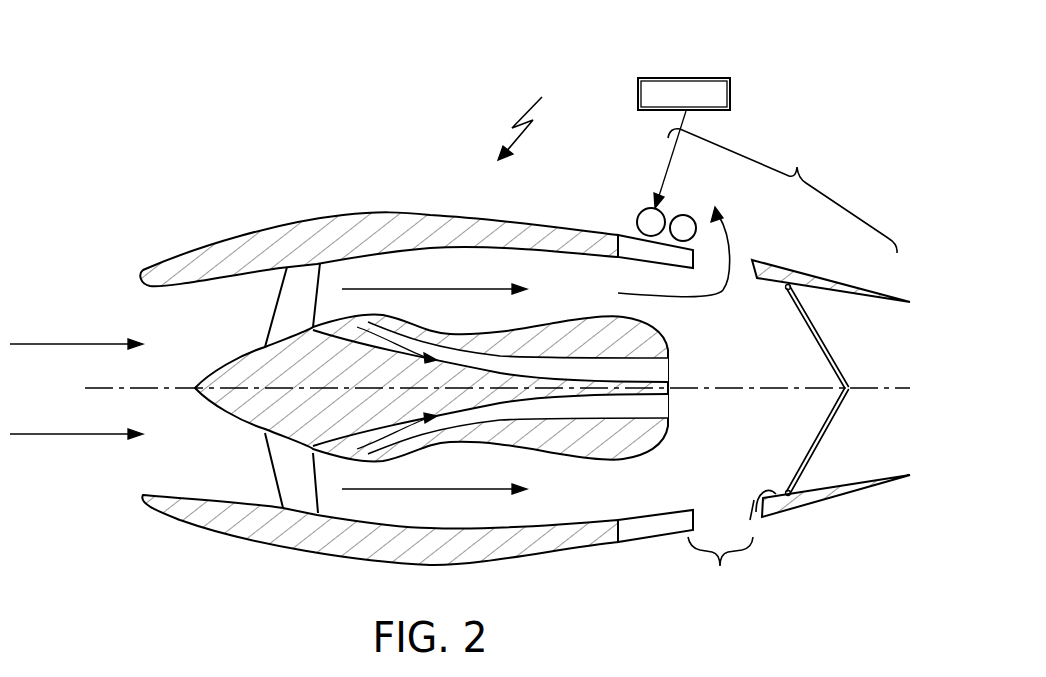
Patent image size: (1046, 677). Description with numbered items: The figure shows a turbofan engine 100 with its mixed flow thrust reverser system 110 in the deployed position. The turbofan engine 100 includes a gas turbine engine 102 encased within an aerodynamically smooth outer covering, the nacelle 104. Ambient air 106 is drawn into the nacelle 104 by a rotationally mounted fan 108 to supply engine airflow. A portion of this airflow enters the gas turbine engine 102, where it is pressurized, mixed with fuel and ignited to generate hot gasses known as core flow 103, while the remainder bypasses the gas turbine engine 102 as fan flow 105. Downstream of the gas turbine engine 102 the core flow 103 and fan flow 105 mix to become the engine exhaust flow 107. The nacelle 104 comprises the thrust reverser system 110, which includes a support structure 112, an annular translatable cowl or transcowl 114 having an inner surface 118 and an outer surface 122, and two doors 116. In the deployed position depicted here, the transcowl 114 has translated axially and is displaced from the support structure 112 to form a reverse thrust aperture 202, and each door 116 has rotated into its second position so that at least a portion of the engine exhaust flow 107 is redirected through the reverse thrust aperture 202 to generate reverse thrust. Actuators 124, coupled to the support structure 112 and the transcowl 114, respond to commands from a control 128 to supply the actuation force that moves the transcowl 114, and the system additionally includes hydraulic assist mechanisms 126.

The turbofan engine 100 is at (536, 114).
The gas turbine engine 102 is at (530, 320).
The core flow 103 is at (407, 345).
The nacelle 104 is at (335, 213).
The fan flow 105 is at (450, 278).
The ambient air 106 is at (88, 344).
The engine exhaust flow 107 is at (717, 302).
The fan 108 is at (302, 272).
The mixed flow thrust reverser system 110 is at (782, 189).
The support structure 112 is at (618, 235).
The transcowl 114 is at (840, 280).
The door 116 is at (822, 338).
The inner surface 118 is at (770, 508).
The outer surface 122 is at (848, 492).
The actuator 124 is at (646, 208).
The hydraulic assist mechanism 126 is at (694, 216).
The control 128 is at (730, 92).
The reverse thrust aperture 202 is at (720, 569).